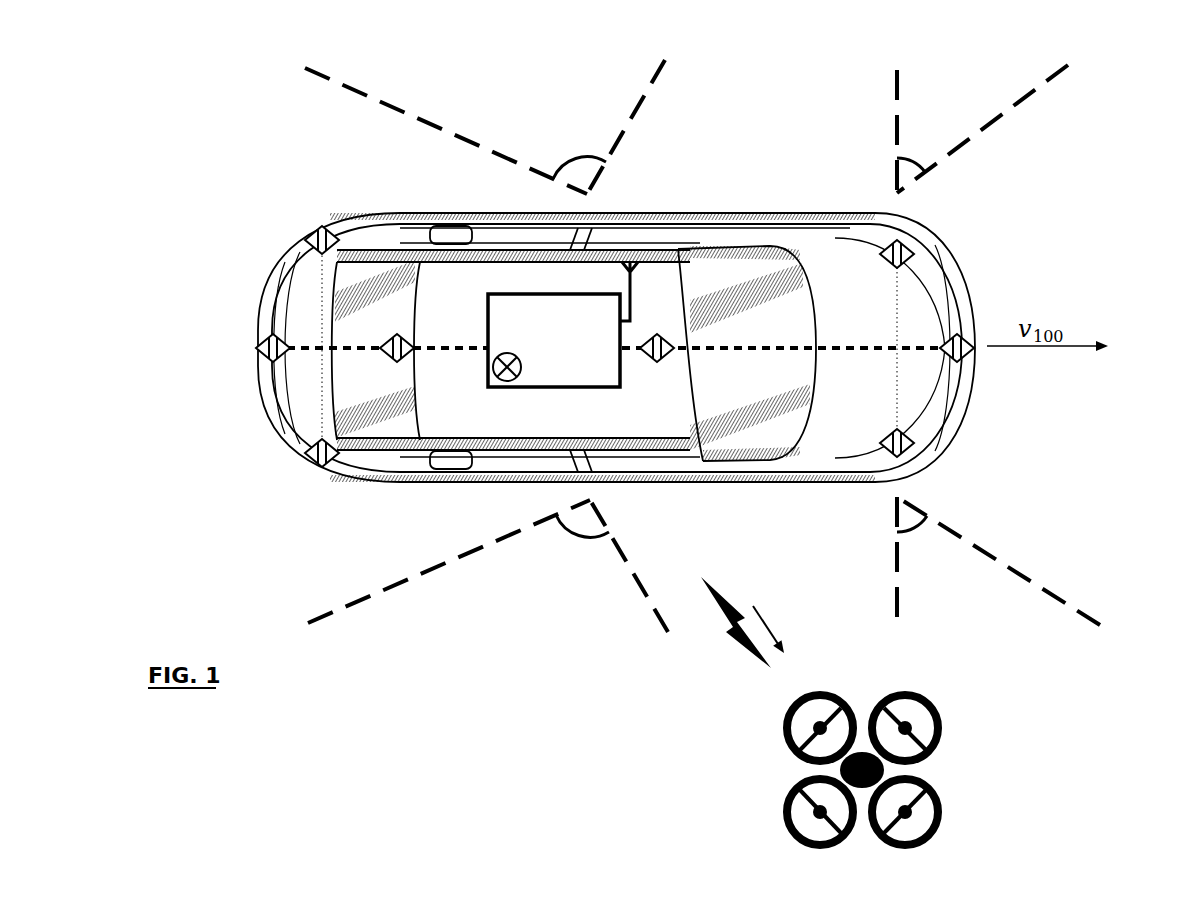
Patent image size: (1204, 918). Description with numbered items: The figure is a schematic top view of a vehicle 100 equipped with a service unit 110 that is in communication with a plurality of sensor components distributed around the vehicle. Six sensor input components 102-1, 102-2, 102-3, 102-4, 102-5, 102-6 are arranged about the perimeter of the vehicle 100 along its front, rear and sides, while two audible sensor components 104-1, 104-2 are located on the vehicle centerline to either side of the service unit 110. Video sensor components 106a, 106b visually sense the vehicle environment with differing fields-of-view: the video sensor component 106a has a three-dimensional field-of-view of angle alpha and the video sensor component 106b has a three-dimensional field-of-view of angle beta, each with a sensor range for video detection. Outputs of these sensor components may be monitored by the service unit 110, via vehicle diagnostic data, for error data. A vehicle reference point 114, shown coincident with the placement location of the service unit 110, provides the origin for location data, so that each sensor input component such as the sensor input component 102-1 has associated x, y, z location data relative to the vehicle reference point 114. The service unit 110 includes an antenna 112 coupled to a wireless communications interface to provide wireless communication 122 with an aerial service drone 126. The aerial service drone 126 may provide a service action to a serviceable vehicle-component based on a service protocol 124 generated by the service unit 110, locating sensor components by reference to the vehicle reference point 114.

The vehicle 100 is at (808, 210).
The sensor input component 102-1 is at (963, 362).
The sensor input component 102-2 is at (882, 268).
The sensor input component 102-3 is at (890, 430).
The sensor input component 102-4 is at (322, 226).
The sensor input component 102-5 is at (262, 338).
The sensor input component 102-6 is at (300, 447).
The audible sensor component 104-1 is at (657, 370).
The audible sensor component 104-2 is at (420, 342).
The video sensor component 106a is at (486, 330).
The video sensor component 106b is at (998, 345).
The service unit 110 is at (560, 393).
The antenna 112 is at (638, 308).
The vehicle reference point 114 is at (492, 366).
The wireless communication 122 is at (757, 653).
The service protocol 124 is at (773, 628).
The aerial service drone 126 is at (975, 813).